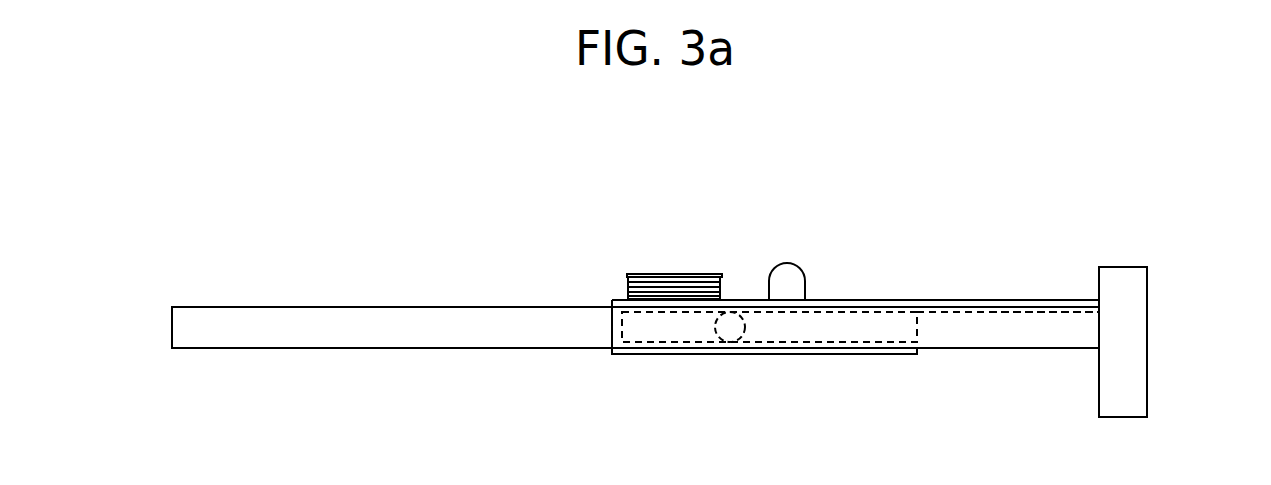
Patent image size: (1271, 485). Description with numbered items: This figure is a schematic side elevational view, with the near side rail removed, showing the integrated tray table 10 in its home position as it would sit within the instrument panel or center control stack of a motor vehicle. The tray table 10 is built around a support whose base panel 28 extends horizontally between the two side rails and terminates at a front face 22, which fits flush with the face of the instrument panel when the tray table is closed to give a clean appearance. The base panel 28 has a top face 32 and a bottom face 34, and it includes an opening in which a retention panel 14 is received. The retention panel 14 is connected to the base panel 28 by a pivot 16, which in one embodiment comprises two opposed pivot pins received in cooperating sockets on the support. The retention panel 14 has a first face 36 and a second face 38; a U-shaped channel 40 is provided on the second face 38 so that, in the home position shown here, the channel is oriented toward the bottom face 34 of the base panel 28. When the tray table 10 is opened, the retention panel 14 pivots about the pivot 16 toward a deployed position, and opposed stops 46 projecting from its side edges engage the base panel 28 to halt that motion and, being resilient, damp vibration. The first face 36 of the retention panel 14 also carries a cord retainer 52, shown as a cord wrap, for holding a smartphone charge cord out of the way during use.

The integrated tray table 10 is at (1091, 162).
The retention panel 14 is at (955, 313).
The pivot 16 is at (713, 327).
The front face 22 is at (1148, 322).
The base panel 28 is at (200, 329).
The top face 32 is at (280, 307).
The bottom face 34 is at (258, 348).
The first face 36 is at (1035, 305).
The second face 38 is at (1013, 313).
The U-shaped channel 40 is at (827, 328).
The stops 46 is at (790, 278).
The cord retainer 52 is at (643, 274).